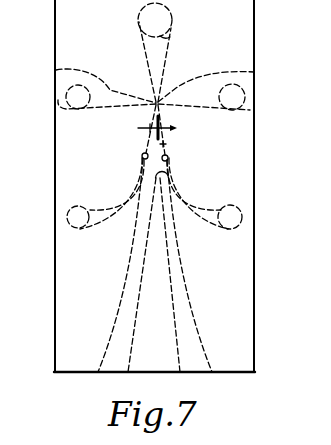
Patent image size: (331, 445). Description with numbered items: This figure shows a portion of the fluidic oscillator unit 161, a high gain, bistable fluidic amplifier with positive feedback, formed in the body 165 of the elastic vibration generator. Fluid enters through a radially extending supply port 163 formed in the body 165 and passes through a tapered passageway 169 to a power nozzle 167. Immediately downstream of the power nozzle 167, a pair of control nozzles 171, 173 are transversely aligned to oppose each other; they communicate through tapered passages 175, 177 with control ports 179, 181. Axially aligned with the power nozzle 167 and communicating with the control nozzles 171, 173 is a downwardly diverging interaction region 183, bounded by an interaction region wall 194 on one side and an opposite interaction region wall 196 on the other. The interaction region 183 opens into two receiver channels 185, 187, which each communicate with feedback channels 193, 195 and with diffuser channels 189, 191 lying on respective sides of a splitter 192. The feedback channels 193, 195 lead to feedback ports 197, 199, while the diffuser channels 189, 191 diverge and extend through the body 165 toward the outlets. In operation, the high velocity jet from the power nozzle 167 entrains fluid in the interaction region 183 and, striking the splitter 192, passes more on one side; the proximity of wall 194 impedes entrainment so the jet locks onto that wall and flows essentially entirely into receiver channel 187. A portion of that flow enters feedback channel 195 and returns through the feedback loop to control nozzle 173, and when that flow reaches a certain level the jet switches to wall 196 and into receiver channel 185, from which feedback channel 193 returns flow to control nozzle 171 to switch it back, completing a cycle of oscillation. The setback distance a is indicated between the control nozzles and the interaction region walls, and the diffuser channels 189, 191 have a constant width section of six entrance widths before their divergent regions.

The fluidic oscillator unit 161 is at (60, 23).
The supply port 163 is at (166, 24).
The body 165 is at (246, 23).
The power nozzle 167 is at (183, 65).
The tapered passageway 169 is at (189, 48).
The control nozzle 171 is at (196, 128).
The control nozzle 173 is at (137, 128).
The tapered passage 175 is at (243, 72).
The tapered passage 177 is at (56, 69).
The control port 179 is at (240, 100).
The control port 181 is at (66, 104).
The interaction region 183 is at (167, 144).
The receiver channel 185 is at (163, 193).
The receiver channel 187 is at (139, 186).
The diffuser channel 189 is at (177, 263).
The diffuser channel 191 is at (134, 265).
The splitter 192 is at (171, 172).
The feedback channel 193 is at (194, 231).
The interaction region wall 194 is at (142, 155).
The feedback channel 195 is at (123, 208).
The interaction region wall 196 is at (169, 158).
The feedback port 197 is at (240, 219).
The feedback port 199 is at (66, 217).